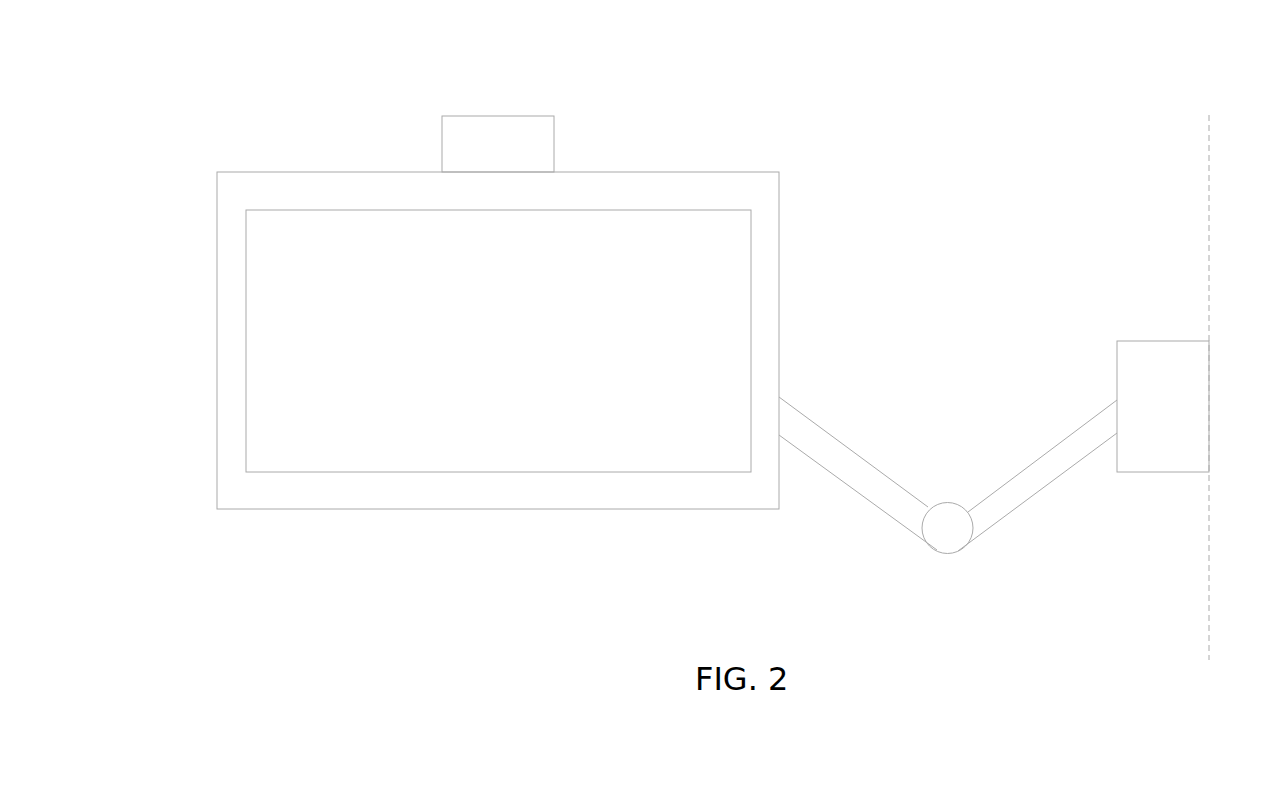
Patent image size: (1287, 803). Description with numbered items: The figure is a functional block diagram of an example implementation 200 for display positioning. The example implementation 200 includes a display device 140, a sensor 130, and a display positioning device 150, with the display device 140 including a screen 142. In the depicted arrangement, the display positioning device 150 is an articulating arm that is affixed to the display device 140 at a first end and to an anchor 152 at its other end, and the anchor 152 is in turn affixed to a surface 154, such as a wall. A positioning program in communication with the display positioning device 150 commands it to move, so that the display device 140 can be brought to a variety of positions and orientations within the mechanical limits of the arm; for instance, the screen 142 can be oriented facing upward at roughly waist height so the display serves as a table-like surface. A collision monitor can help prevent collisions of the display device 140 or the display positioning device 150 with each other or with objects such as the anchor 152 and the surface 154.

The sensor 130 is at (478, 116).
The display device 140 is at (217, 190).
The screen 142 is at (246, 305).
The display positioning device 150 is at (1039, 493).
The anchor 152 is at (1117, 352).
The surface 154 is at (1209, 198).
The example implementation 200 is at (1002, 85).